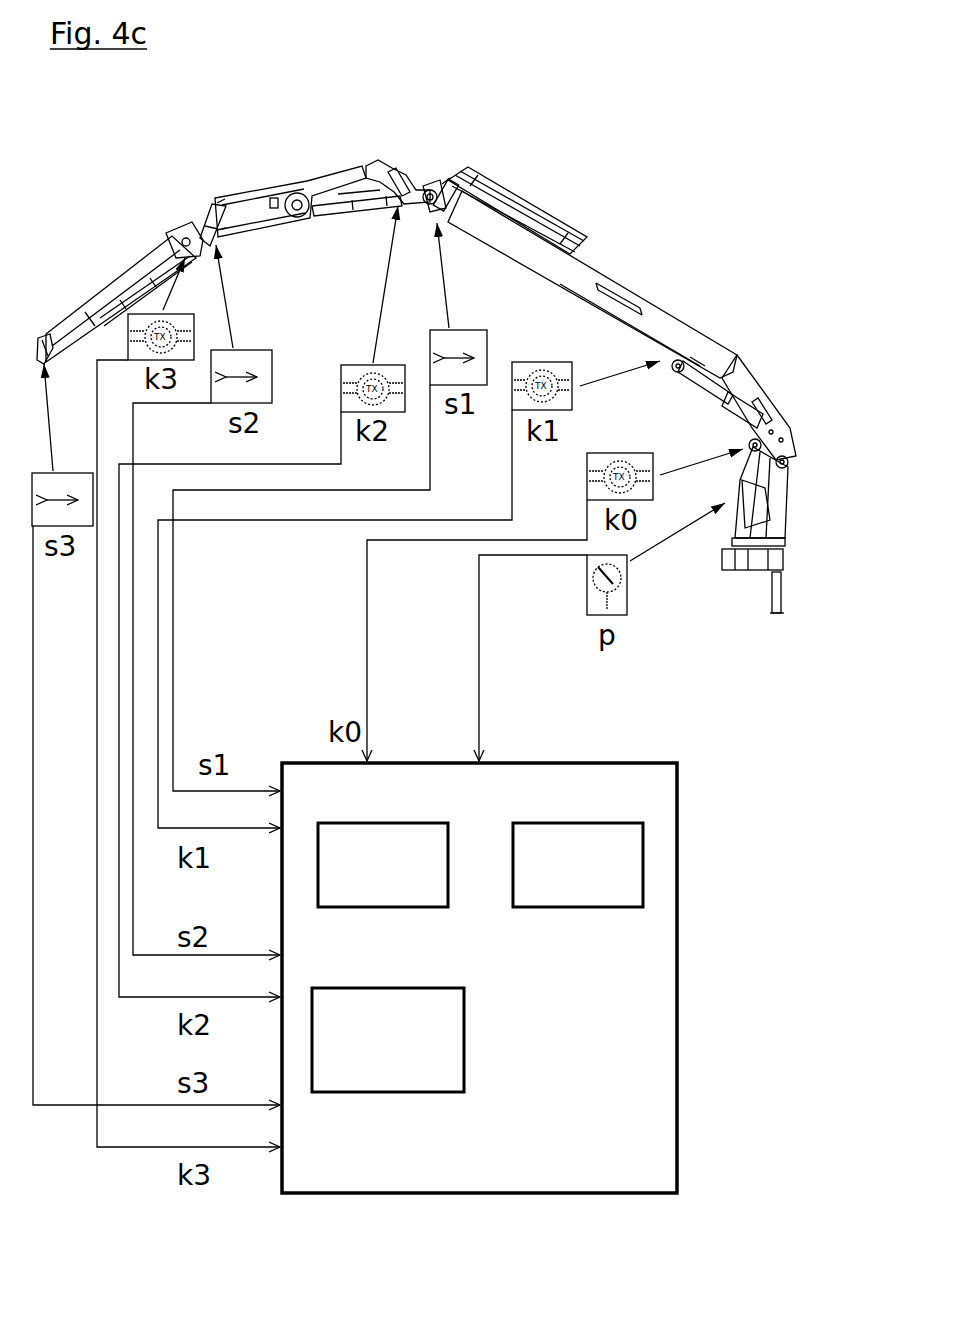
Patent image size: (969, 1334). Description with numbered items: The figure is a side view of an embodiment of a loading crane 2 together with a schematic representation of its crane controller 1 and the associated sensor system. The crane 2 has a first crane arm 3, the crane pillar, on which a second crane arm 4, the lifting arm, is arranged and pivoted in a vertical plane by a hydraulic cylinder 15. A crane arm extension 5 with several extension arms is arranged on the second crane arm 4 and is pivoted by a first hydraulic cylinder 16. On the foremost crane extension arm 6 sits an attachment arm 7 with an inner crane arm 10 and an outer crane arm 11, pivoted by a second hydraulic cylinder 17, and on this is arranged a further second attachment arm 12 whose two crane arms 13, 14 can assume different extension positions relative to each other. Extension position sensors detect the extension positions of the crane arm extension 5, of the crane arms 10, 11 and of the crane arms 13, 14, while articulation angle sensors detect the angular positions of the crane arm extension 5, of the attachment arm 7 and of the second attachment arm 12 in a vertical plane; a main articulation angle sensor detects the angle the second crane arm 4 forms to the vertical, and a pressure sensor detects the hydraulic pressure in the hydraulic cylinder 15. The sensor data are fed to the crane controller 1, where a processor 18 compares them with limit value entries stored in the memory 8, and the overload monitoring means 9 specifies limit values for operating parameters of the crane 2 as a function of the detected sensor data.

The crane controller 1 is at (280, 705).
The crane 2 is at (623, 211).
The first crane arm 3 is at (773, 484).
The second crane arm 4 is at (738, 385).
The crane arm extension 5 is at (696, 311).
The foremost crane extension arm 6 is at (427, 190).
The attachment arm 7 is at (250, 169).
The memory 8 is at (388, 1040).
The overload monitoring means 9 is at (383, 865).
The inner crane arm 10 is at (327, 182).
The outer crane arm 11 is at (201, 226).
The second attachment arm 12 is at (103, 249).
The crane arm 13 is at (158, 250).
The crane arm 14 is at (44, 352).
The hydraulic cylinder 15 is at (743, 480).
The first hydraulic cylinder 16 is at (722, 404).
The second hydraulic cylinder 17 is at (355, 214).
The processor 18 is at (578, 865).